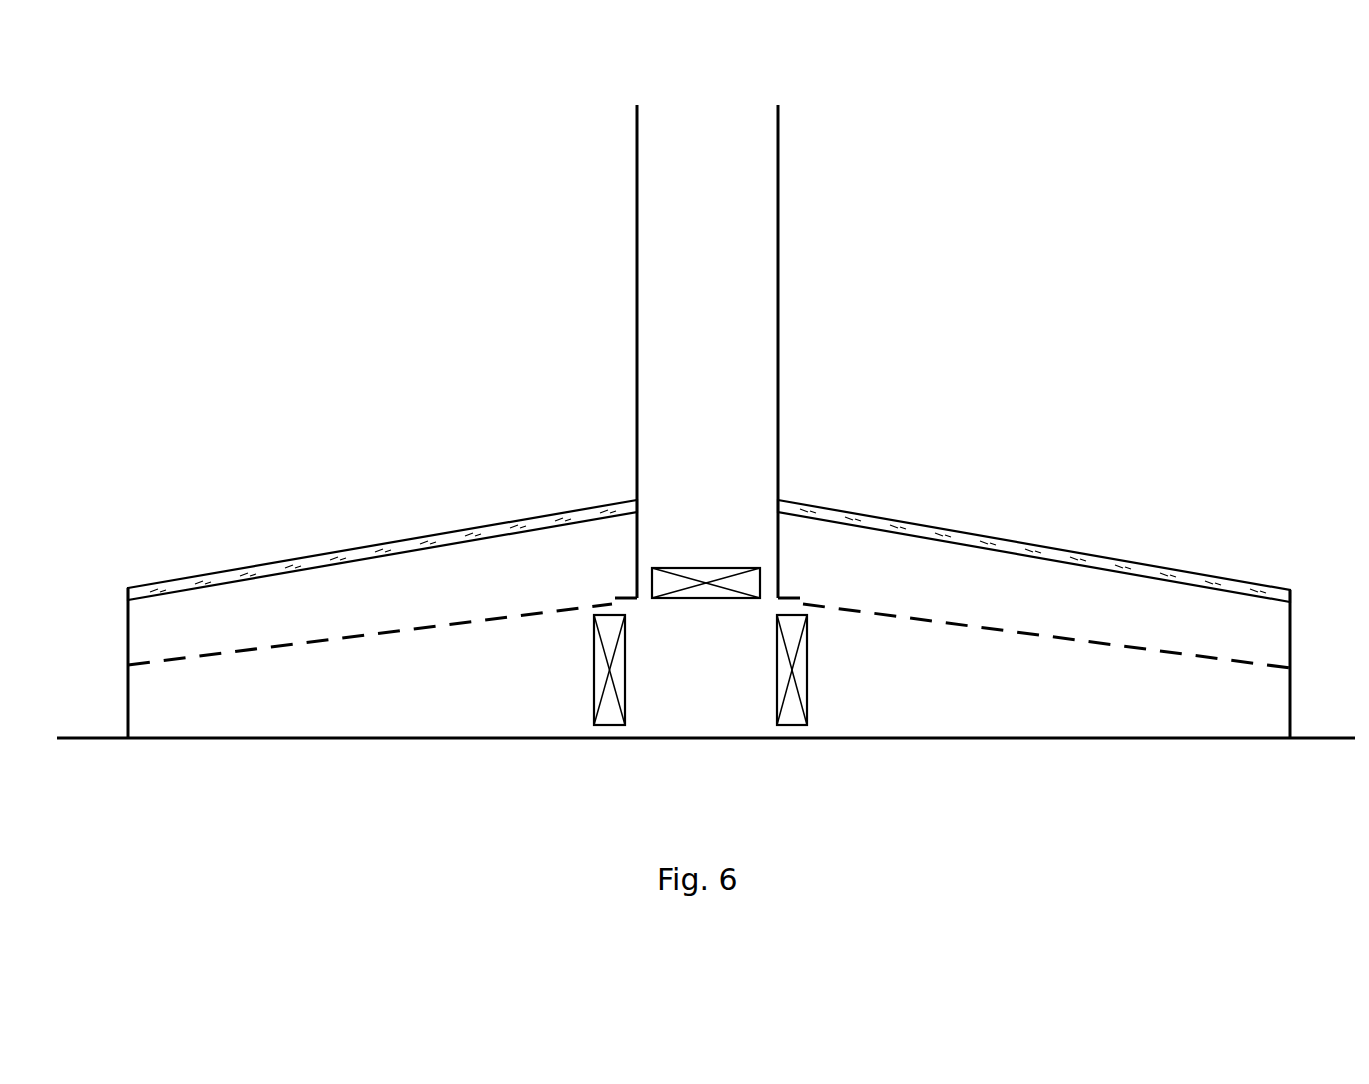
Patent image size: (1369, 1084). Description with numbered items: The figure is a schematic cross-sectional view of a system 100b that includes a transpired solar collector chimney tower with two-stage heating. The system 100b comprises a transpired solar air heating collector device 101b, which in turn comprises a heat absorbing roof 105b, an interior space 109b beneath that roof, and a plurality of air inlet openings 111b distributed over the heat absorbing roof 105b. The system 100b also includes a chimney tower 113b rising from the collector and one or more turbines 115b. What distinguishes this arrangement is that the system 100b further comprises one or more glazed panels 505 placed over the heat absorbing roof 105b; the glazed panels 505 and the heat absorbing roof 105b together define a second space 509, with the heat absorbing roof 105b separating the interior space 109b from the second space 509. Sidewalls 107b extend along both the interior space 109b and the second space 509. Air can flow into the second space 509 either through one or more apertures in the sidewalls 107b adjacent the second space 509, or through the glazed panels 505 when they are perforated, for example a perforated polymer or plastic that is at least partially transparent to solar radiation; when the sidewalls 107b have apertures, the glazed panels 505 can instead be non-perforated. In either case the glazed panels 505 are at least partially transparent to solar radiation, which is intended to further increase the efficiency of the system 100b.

The system 100b is at (292, 835).
The transpired solar air heating collector device 101b is at (347, 730).
The heat absorbing roof 105b is at (135, 658).
The sidewalls 107b is at (1292, 643).
The interior space 109b is at (292, 690).
The air inlet openings 111b is at (290, 637).
The chimney tower 113b is at (637, 333).
The turbines 115b is at (795, 614).
The glazed panels 505 is at (248, 570).
The second space 509 is at (682, 595).